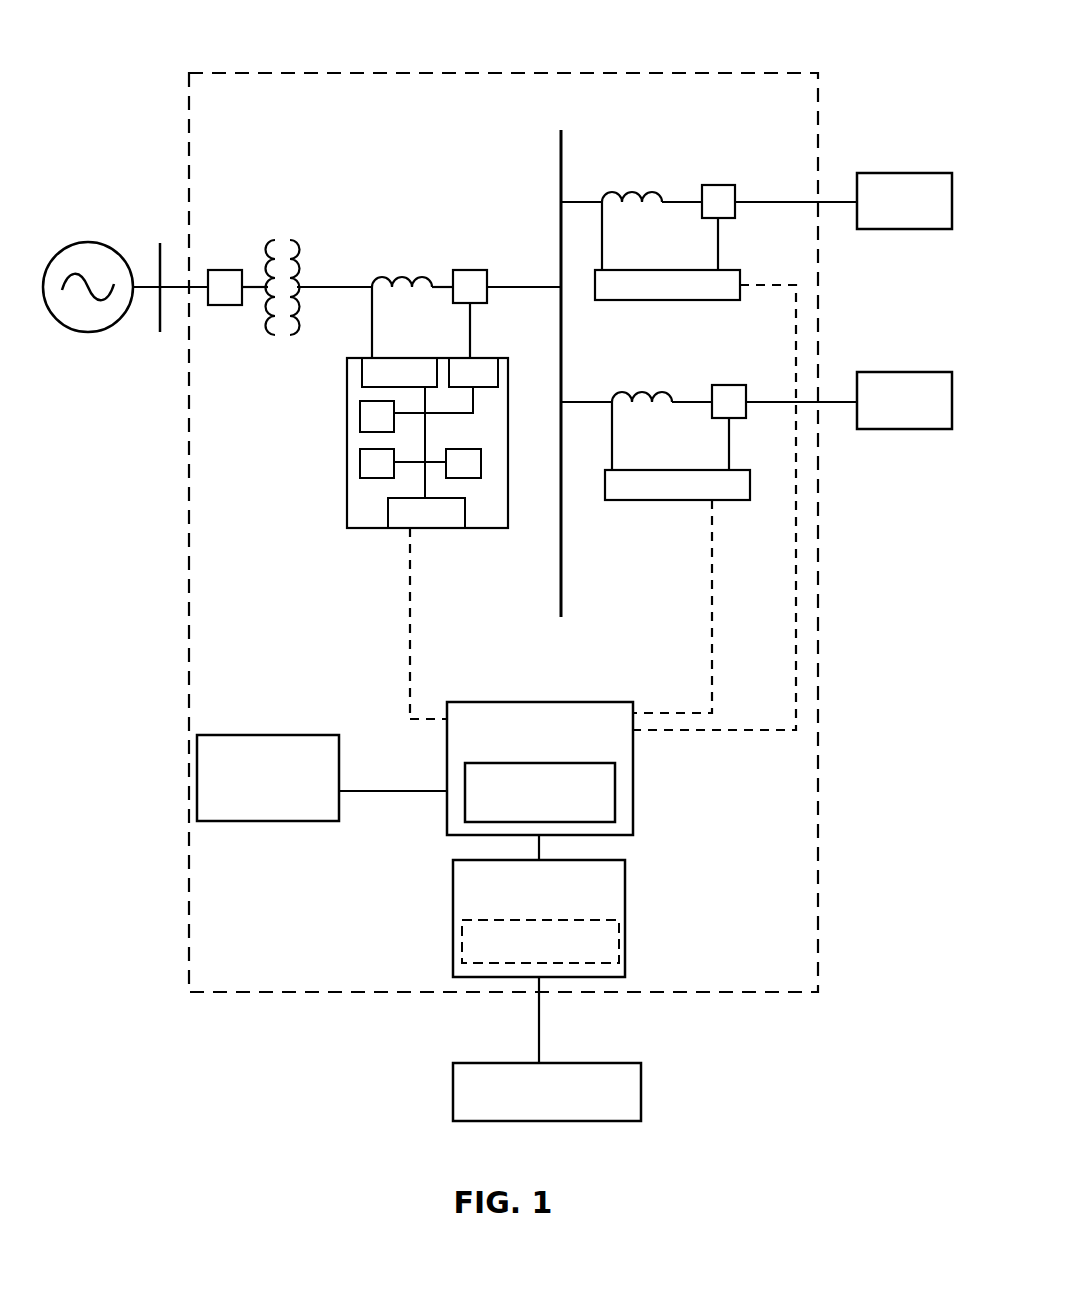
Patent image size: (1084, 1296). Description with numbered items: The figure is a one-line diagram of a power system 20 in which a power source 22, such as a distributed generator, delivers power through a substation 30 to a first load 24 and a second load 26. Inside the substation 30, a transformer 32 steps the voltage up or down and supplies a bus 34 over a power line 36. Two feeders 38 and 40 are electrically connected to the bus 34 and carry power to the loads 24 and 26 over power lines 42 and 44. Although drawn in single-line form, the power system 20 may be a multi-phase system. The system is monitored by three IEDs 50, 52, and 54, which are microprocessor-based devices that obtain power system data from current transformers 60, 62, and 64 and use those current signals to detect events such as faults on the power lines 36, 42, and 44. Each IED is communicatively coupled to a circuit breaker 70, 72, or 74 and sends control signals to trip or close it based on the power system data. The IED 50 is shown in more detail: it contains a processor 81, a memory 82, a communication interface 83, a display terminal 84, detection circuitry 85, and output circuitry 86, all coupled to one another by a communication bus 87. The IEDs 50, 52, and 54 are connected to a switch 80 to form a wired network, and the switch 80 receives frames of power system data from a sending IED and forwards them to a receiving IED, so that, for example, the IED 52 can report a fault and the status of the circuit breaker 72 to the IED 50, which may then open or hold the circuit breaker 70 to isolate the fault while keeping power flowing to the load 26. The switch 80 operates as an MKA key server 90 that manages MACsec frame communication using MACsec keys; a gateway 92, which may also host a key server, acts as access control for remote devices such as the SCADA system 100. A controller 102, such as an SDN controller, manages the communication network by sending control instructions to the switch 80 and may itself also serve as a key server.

The power system 20 is at (808, 47).
The power source 22 is at (90, 243).
The load 24 is at (903, 173).
The load 26 is at (903, 372).
The substation 30 is at (189, 598).
The transformer 32 is at (276, 240).
The bus 34 is at (561, 598).
The power line 36 is at (530, 287).
The feeder 38 is at (873, 252).
The feeder 40 is at (880, 455).
The power line 42 is at (775, 202).
The power line 44 is at (775, 402).
The IED 50 is at (347, 376).
The IED 52 is at (672, 300).
The IED 54 is at (672, 500).
The current transformer 60 is at (392, 280).
The current transformer 62 is at (620, 195).
The current transformer 64 is at (627, 395).
The circuit breaker 70 is at (470, 270).
The circuit breaker 72 is at (716, 185).
The circuit breaker 74 is at (727, 385).
The switch 80 is at (514, 702).
The processor 81 is at (360, 418).
The memory 82 is at (481, 463).
The communication interface 83 is at (455, 528).
The display terminal 84 is at (360, 466).
The detection circuitry 85 is at (404, 358).
The output circuitry 86 is at (498, 372).
The communication bus 87 is at (475, 404).
The key server 90 is at (465, 785).
The gateway 92 is at (453, 910).
The SCADA system 100 is at (453, 1075).
The controller 102 is at (197, 763).